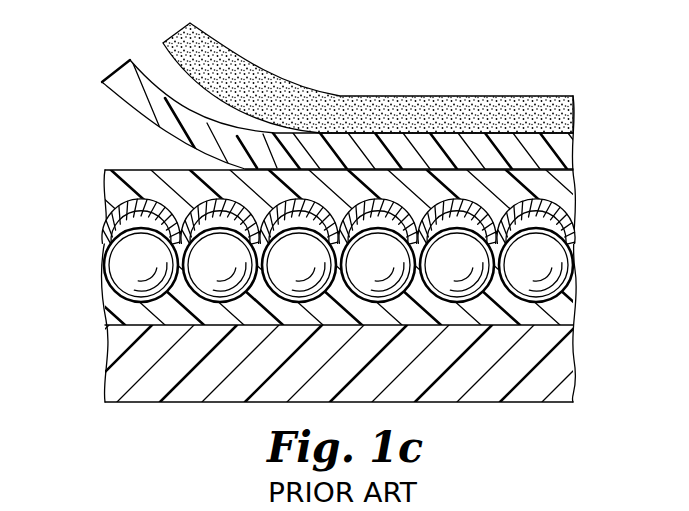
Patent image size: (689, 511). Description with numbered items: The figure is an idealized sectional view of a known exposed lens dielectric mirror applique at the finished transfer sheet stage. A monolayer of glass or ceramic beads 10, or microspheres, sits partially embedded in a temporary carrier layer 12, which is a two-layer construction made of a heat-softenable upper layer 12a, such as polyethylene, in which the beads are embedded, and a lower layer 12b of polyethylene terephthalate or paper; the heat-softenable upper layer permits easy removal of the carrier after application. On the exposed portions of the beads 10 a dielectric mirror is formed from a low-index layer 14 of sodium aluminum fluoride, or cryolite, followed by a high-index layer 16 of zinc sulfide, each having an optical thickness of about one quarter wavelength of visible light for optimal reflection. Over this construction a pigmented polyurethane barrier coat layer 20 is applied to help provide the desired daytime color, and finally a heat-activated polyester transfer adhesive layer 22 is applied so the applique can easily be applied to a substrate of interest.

The beads 10 is at (552, 247).
The temporary carrier layer 12 is at (583, 278).
The upper layer 12a is at (108, 307).
The lower layer 12b is at (120, 382).
The layer of sodium aluminum fluoride 14 is at (115, 232).
The layer of zinc sulfide 16 is at (123, 212).
The polyurethane barrier coat layer 20 is at (121, 82).
The transfer adhesive layer 22 is at (208, 55).